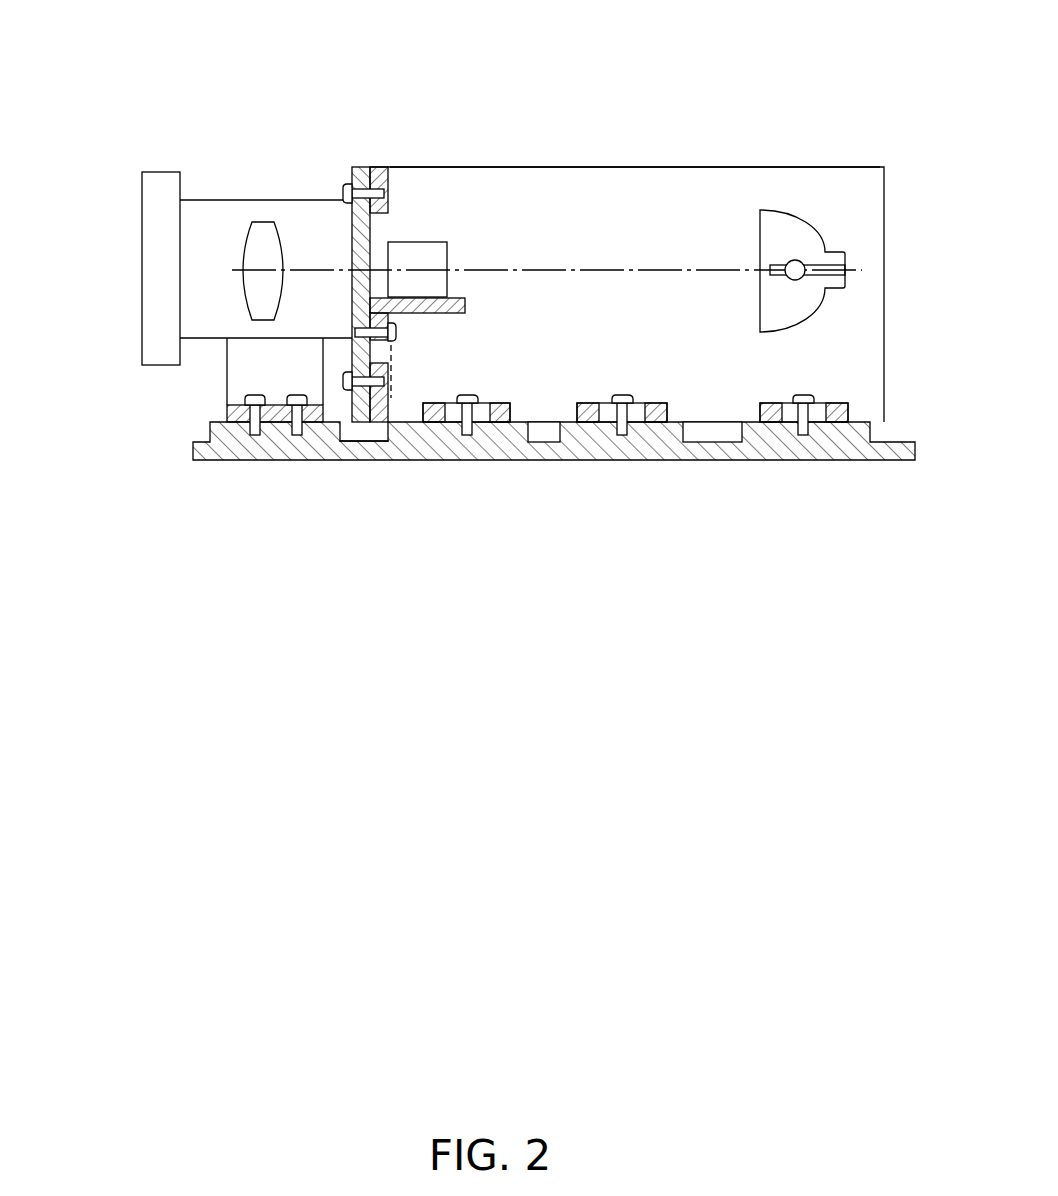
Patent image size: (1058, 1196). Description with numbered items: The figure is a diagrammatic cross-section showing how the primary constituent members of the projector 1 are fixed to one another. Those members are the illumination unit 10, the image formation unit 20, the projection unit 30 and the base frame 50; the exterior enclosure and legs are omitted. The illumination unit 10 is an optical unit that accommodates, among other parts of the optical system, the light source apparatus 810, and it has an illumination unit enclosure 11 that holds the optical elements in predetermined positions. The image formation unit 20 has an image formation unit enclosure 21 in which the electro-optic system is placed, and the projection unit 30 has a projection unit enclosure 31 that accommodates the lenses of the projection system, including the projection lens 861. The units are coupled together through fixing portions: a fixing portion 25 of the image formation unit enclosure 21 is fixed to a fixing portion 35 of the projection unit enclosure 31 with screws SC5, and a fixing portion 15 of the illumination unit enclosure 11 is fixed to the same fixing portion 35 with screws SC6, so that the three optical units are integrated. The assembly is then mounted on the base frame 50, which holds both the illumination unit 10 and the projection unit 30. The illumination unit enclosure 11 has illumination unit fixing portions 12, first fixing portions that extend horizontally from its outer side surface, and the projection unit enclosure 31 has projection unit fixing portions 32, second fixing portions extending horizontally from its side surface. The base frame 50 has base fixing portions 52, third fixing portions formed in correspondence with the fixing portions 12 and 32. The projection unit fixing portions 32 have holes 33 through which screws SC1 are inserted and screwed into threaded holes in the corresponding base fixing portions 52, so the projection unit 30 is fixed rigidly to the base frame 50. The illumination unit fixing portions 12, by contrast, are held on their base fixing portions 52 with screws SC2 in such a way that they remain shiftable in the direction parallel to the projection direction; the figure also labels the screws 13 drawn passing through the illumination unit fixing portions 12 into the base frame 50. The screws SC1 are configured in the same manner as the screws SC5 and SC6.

The projector 1 is at (846, 66).
The illumination unit 10 is at (713, 151).
The illumination unit enclosure 11 is at (567, 166).
The illumination unit fixing portions 12 is at (510, 402).
The fixing screws 13 is at (456, 436).
The fixing portion 15 is at (380, 167).
The image formation unit 20 is at (440, 230).
The image formation unit enclosure 21 is at (465, 303).
The fixing portion 25 is at (392, 352).
The projection unit 30 is at (126, 247).
The projection unit enclosure 31 is at (213, 199).
The projection unit fixing portions 32 is at (226, 409).
The holes 33 is at (246, 460).
The fixing portion 35 is at (360, 167).
The base frame 50 is at (892, 474).
The base fixing portions 52 is at (352, 443).
The light source apparatus 810 is at (820, 226).
The projection lens 861 is at (262, 221).
The screws SC1 is at (258, 395).
The screws SC2 is at (805, 395).
The screws SC5 is at (397, 332).
The screws SC6 is at (350, 205).